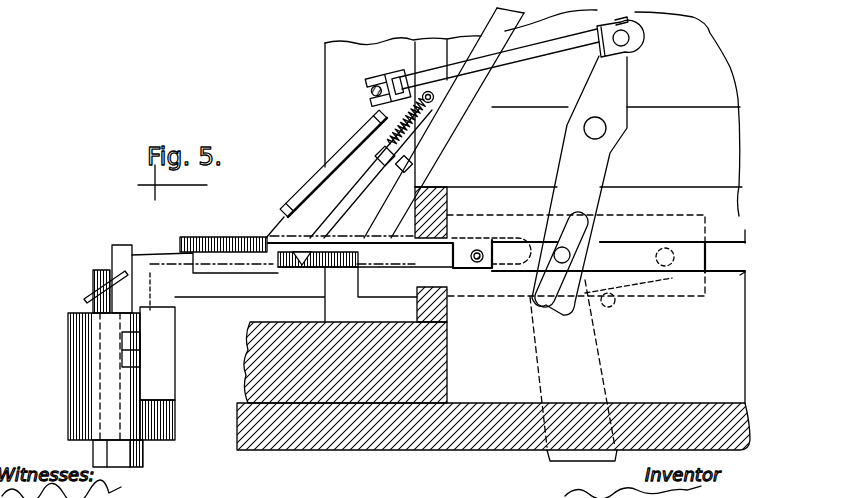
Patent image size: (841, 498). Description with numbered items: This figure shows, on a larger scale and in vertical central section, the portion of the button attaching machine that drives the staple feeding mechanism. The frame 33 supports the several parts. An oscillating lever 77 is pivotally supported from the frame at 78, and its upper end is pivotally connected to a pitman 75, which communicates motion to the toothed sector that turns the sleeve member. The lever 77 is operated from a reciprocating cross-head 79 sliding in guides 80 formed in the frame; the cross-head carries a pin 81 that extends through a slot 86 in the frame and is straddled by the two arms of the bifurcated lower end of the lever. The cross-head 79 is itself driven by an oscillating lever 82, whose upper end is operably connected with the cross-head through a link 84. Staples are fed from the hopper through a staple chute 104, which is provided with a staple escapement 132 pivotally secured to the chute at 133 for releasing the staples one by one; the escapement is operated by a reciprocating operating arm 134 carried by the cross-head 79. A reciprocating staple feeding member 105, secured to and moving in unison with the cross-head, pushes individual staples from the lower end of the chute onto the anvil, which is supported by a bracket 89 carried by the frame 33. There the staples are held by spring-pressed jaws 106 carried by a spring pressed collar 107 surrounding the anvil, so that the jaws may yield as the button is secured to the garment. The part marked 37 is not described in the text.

The frame 33 is at (700, 422).
The bar cap 37 is at (412, 2).
The pitman 75 is at (536, 57).
The oscillating lever 77 is at (582, 150).
The pivot 78 is at (603, 127).
The reciprocating cross-head 79 is at (710, 256).
The guides 80 is at (746, 240).
The pin 81 is at (587, 255).
The oscillating lever 82 is at (548, 459).
The link 84 is at (628, 299).
The slot 86 is at (716, 273).
The bracket 89 is at (93, 376).
The staple chute 104 is at (425, 117).
The reciprocating staple feeding member 105 is at (254, 236).
The spring-pressed jaws 106 is at (118, 253).
The spring pressed collar 107 is at (100, 279).
The staple escapement 132 is at (357, 184).
The pivot 133 is at (406, 160).
The reciprocating operating arm 134 is at (398, 247).